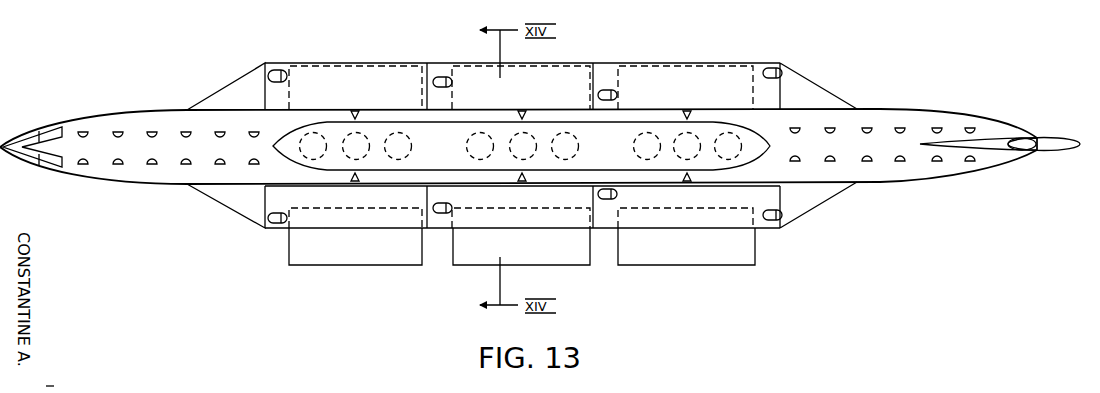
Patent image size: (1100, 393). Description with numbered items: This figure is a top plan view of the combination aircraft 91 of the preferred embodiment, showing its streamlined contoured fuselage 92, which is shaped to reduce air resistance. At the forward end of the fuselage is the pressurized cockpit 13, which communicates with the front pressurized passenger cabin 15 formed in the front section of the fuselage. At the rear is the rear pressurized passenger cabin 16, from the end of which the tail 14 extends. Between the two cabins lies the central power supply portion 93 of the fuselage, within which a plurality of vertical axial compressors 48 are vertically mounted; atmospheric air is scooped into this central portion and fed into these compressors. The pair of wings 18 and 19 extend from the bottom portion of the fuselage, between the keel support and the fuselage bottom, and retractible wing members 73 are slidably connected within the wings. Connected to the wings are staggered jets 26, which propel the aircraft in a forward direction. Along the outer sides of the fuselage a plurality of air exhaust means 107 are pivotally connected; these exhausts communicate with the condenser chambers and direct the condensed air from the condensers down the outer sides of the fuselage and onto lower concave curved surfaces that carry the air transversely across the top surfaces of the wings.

The cockpit enclosure 13 is at (55, 167).
The rear vertical tail fin 14 is at (1052, 152).
The front pressurized passenger cabin 15 is at (162, 175).
The rear pressurized passenger cabin 16 is at (953, 166).
The wing 18 is at (717, 62).
The wing 19 is at (615, 230).
The staggered jets 26 is at (284, 72).
The vertical axial compressors 48 is at (322, 140).
The retractible wing members 73 is at (712, 253).
The combination aircraft 91 is at (858, 97).
The streamlined contoured fuselage 92 is at (822, 180).
The central power supply portion 93 is at (620, 128).
The air exhaust means 107 is at (355, 115).